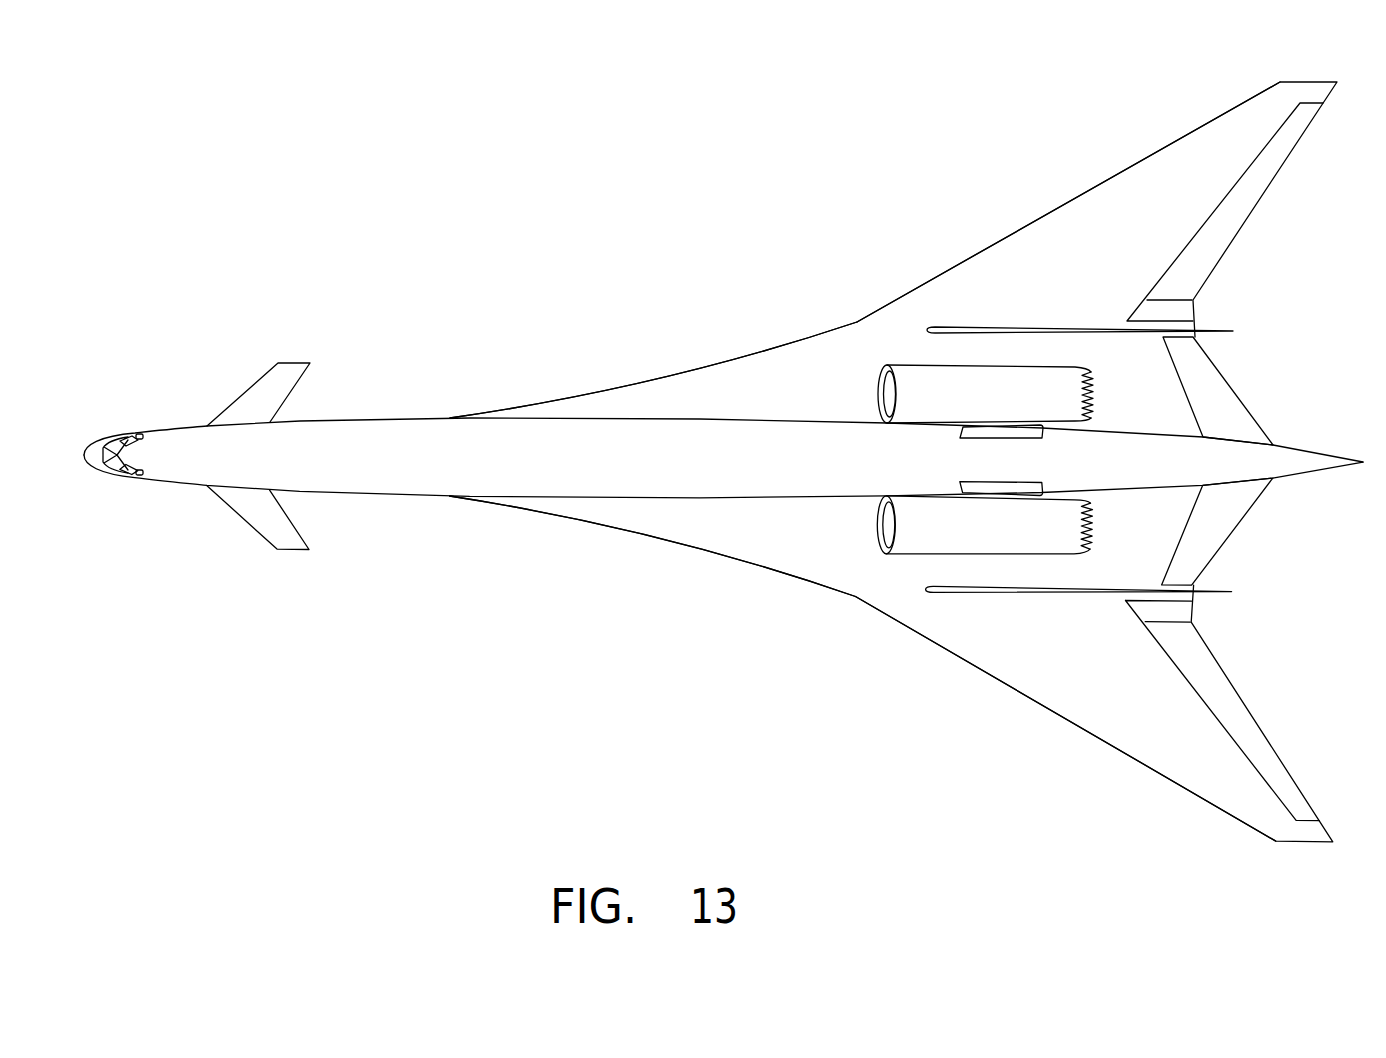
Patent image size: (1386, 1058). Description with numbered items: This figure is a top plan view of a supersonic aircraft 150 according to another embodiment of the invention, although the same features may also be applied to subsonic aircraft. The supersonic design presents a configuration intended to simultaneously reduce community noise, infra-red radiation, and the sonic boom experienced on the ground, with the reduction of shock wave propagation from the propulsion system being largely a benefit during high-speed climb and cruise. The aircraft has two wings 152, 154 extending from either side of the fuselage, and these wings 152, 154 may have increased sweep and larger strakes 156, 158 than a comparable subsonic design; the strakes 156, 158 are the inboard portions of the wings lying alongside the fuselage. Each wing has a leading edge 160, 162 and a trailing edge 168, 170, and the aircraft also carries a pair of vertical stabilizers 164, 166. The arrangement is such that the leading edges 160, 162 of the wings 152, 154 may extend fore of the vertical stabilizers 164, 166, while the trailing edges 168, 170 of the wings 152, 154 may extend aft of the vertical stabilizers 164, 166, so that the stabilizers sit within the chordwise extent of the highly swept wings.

The supersonic aircraft 150 is at (323, 257).
The wing 152 is at (1119, 694).
The wing 154 is at (1119, 254).
The strake 156 is at (765, 535).
The strake 158 is at (765, 408).
The leading edge 160 is at (978, 667).
The leading edge 162 is at (980, 252).
The vertical stabilizer 164 is at (1003, 598).
The vertical stabilizer 166 is at (1005, 325).
The trailing edge 168 is at (1250, 717).
The trailing edge 170 is at (1252, 207).